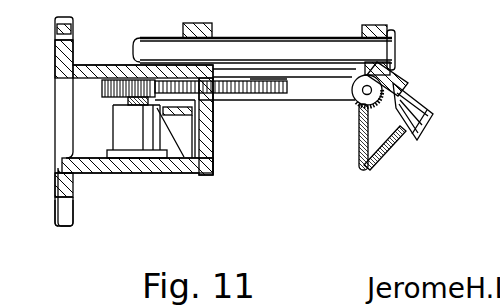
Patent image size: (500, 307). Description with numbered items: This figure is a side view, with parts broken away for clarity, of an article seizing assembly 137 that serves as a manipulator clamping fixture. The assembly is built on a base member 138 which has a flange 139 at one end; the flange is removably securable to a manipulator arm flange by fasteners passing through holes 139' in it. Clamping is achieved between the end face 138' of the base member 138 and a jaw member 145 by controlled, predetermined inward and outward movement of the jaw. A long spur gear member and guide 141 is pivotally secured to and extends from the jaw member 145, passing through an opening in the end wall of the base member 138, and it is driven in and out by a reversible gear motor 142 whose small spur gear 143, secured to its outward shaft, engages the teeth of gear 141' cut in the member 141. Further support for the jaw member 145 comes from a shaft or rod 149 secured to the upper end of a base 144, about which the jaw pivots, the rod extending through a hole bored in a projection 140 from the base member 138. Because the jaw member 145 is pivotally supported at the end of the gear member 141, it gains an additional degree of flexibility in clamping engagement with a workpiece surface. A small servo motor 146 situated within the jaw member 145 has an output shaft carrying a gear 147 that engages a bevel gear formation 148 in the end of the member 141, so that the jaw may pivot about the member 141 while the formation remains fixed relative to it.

The article seizing assembly 137 is at (294, 164).
The base member 138 is at (134, 121).
The end face 138' is at (245, 129).
The flange 139 is at (68, 235).
The holes 139' is at (95, 20).
The projection 140 is at (189, 27).
The spur gear member and guide 141 is at (255, 114).
The gear teeth 141' is at (282, 107).
The reversible gear motor 142 is at (135, 140).
The small spur gear 143 is at (180, 173).
The base 144 is at (392, 24).
The jaw member 145 is at (382, 155).
The servo motor 146 is at (418, 122).
The gear 147 is at (398, 80).
The bevel gear formation 148 is at (360, 113).
The shaft or rod 149 is at (155, 50).